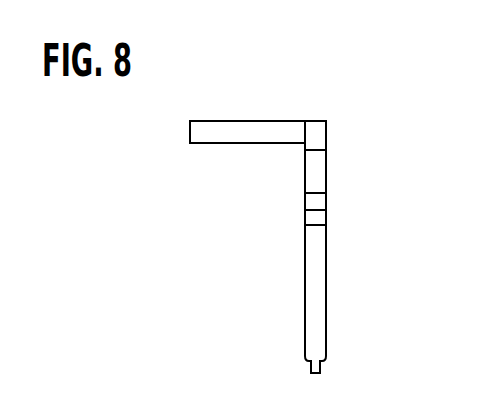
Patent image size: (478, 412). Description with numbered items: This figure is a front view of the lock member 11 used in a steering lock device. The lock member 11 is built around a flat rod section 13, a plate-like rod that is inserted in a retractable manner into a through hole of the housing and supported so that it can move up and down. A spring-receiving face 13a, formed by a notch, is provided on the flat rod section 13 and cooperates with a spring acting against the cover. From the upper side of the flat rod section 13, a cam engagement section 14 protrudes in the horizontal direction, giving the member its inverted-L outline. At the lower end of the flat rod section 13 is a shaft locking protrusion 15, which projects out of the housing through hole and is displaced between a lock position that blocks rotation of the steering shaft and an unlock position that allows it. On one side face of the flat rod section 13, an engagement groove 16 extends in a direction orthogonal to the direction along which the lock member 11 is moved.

The lock member 11 is at (337, 119).
The flat rod section 13 is at (323, 280).
The spring-receiving face 13a is at (314, 162).
The cam engagement section 14 is at (262, 127).
The shaft locking protrusion 15 is at (320, 369).
The engagement groove 16 is at (315, 226).